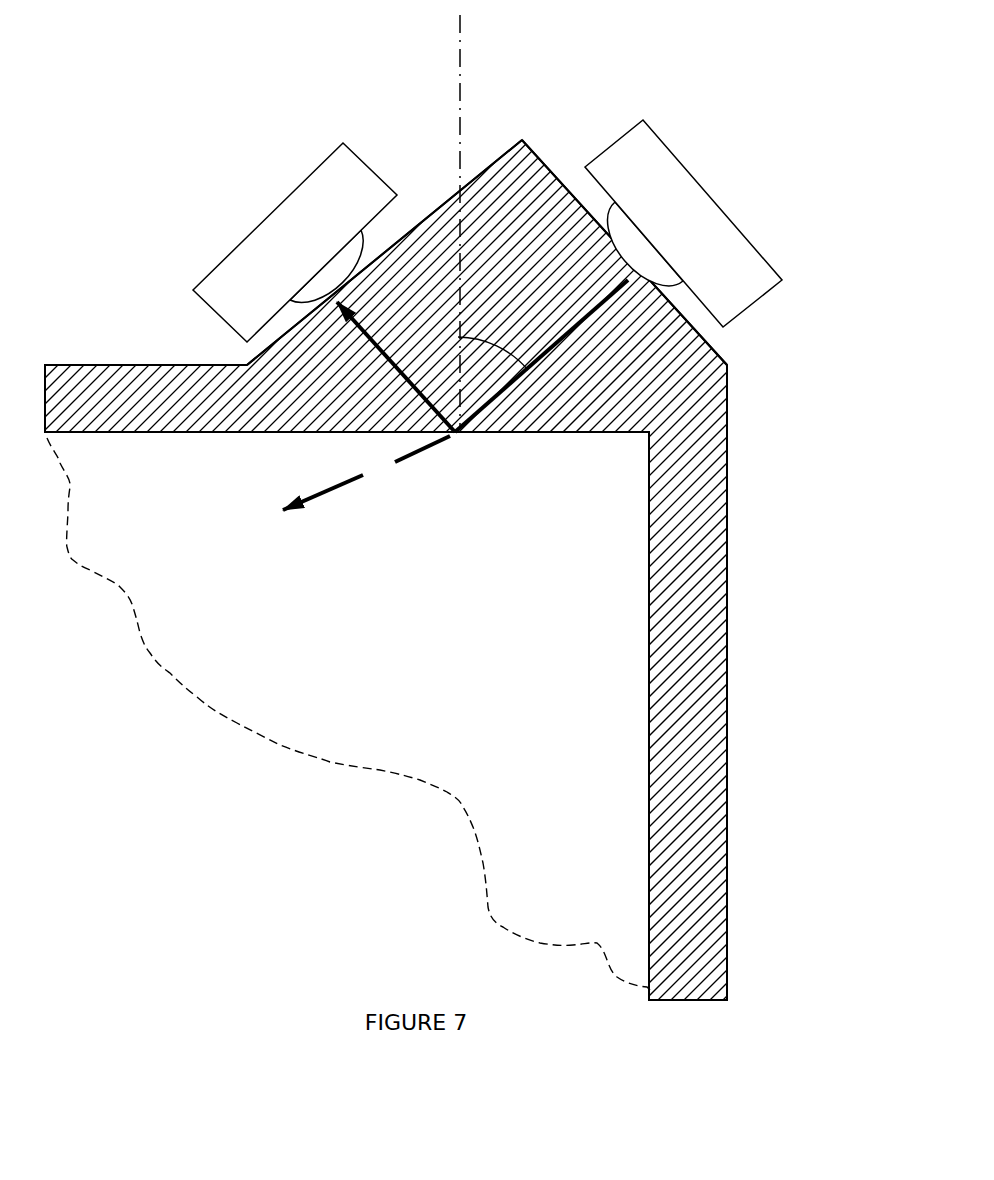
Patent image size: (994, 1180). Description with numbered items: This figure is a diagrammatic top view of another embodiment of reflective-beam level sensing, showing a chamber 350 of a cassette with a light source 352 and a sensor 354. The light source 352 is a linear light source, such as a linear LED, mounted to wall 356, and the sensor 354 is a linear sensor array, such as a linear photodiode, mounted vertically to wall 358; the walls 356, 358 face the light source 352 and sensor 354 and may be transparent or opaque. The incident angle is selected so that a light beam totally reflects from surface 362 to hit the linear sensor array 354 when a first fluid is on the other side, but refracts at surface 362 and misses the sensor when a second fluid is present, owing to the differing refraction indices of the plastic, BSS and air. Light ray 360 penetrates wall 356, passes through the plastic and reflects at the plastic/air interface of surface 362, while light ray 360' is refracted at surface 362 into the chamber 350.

The chamber 350 is at (312, 698).
The light source 352 is at (702, 168).
The sensor 354 is at (281, 199).
The wall 356 is at (697, 338).
The wall 358 is at (431, 214).
The light ray 360 is at (324, 403).
The light ray 360' is at (366, 524).
The surface 362 is at (553, 434).